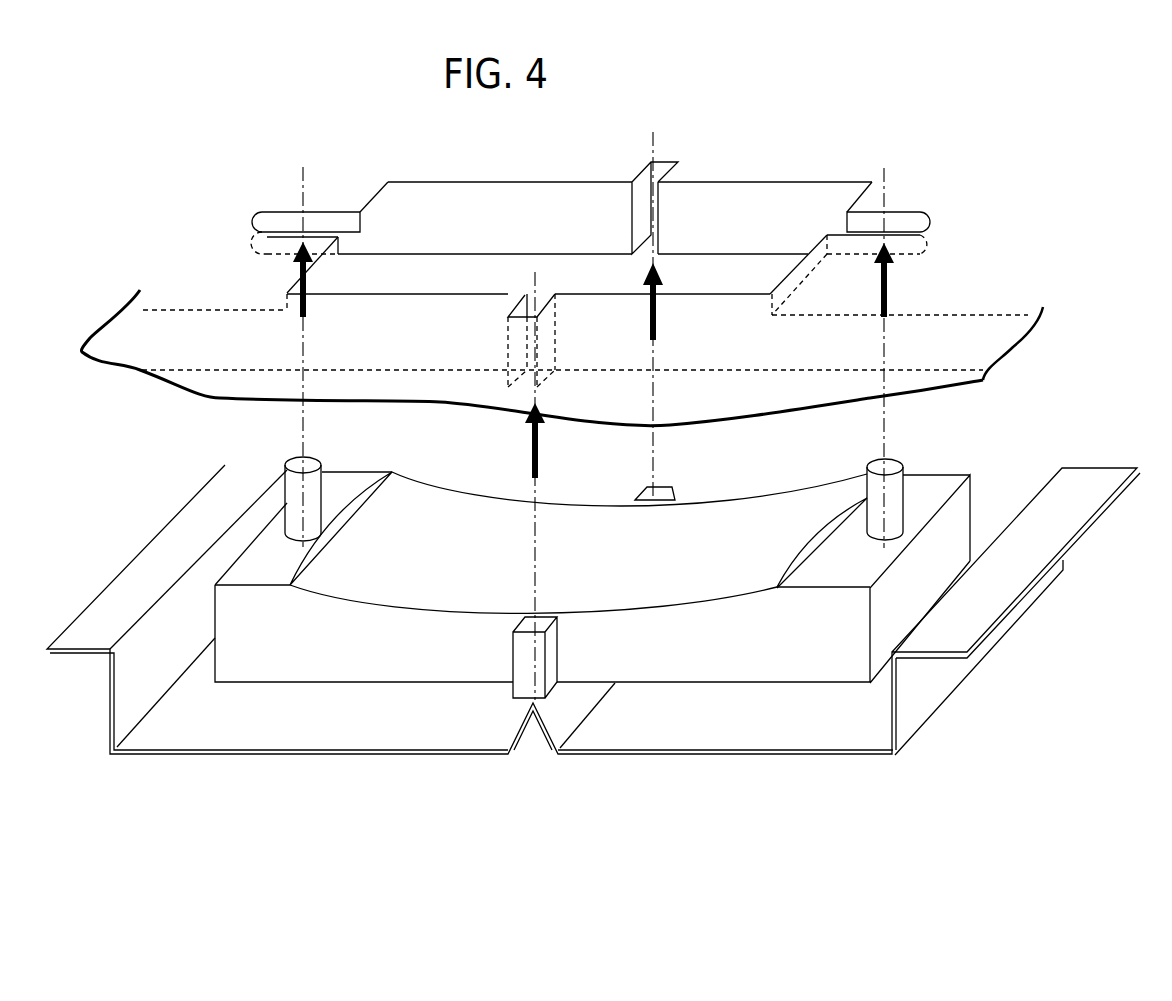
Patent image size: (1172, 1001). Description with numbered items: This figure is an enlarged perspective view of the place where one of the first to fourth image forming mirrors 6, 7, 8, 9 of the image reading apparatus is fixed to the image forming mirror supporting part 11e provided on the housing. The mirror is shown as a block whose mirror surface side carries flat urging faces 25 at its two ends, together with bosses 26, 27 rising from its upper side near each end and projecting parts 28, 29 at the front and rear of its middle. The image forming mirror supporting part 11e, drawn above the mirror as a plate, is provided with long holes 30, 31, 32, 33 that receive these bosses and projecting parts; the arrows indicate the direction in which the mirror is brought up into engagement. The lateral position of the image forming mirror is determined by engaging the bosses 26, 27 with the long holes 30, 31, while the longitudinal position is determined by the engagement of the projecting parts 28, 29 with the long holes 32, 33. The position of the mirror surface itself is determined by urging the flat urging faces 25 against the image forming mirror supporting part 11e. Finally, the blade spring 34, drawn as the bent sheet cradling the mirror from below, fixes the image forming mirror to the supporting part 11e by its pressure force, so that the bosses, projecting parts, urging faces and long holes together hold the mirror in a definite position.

The image forming mirror supporting part 11e is at (353, 205).
The long hole 31 is at (277, 233).
The long hole 30 is at (920, 233).
The long hole 32 is at (522, 297).
The long hole 33 is at (662, 172).
The blade spring 34 is at (855, 723).
The first image forming mirror 6 is at (592, 672).
The second image forming mirror 7 is at (592, 672).
The third image forming mirror 8 is at (592, 672).
The fourth image forming mirror 9 is at (393, 647).
The flat urging faces 25 is at (838, 568).
The boss 26 is at (893, 510).
The boss 27 is at (293, 498).
The projecting part 28 is at (522, 677).
The projecting part 29 is at (710, 470).